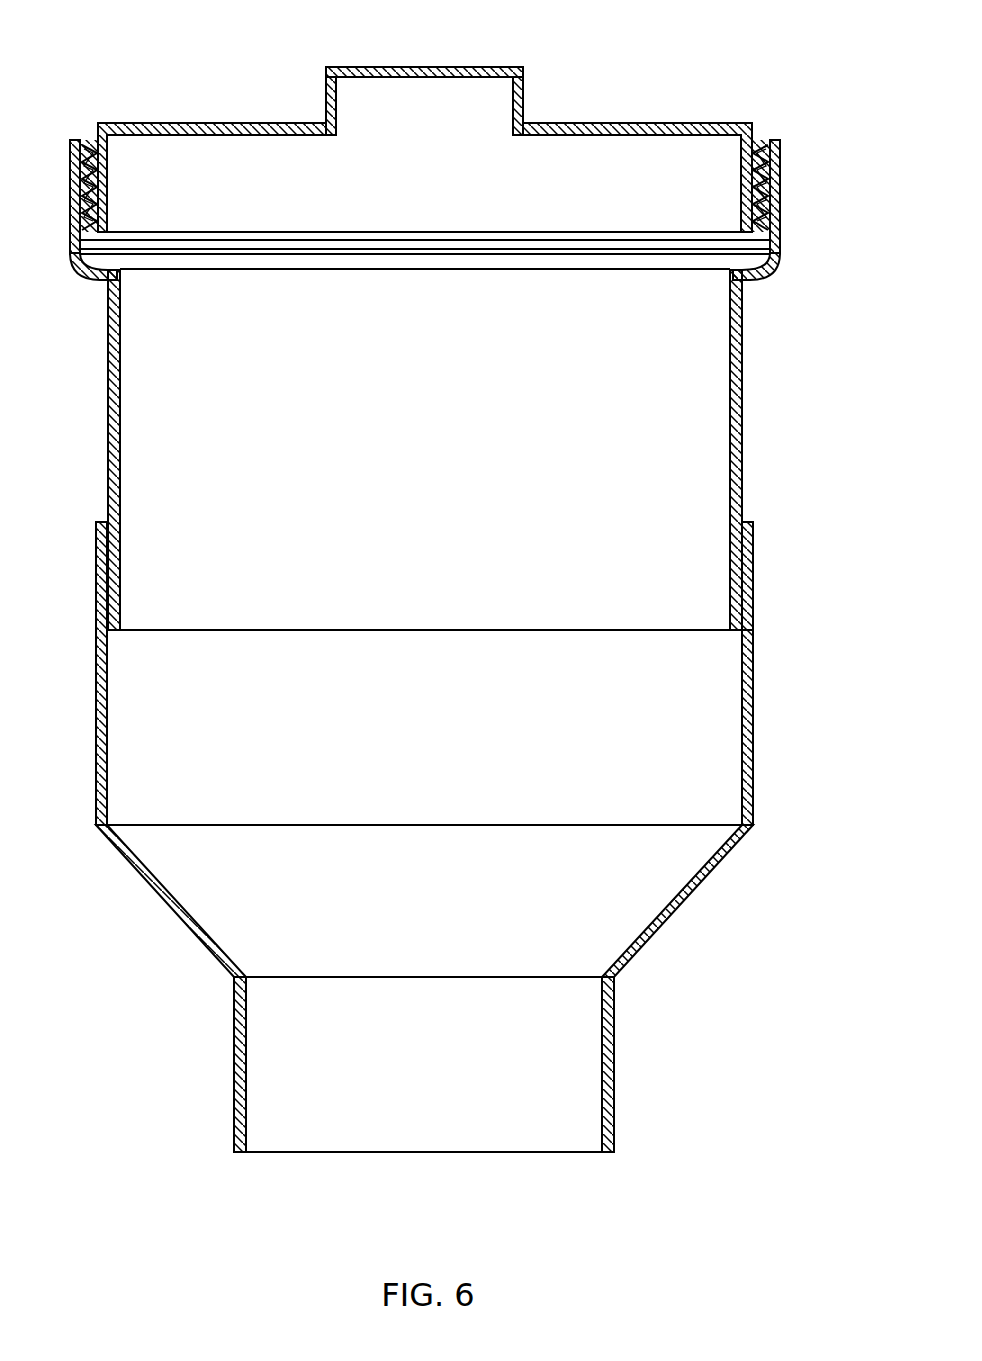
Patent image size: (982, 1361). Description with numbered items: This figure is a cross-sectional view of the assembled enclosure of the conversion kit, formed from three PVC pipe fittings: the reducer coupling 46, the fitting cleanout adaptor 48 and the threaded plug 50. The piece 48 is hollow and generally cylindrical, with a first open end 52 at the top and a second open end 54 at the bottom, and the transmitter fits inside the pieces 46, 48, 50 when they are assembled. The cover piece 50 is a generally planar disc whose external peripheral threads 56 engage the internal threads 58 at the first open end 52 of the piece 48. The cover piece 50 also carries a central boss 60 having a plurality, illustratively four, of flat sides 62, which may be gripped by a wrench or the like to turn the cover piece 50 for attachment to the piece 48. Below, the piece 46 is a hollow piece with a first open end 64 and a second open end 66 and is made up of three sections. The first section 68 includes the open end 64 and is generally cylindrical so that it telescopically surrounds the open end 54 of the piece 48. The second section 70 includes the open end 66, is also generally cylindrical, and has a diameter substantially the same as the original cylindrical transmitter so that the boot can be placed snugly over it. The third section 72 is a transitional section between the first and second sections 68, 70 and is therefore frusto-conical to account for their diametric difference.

The reducer coupling 46 is at (683, 903).
The fitting cleanout adaptor 48 is at (745, 397).
The threaded plug 50 is at (620, 122).
The first open end 52 is at (758, 140).
The second open end 54 is at (700, 630).
The external peripheral threads 56 is at (92, 140).
The internal threads 58 is at (105, 218).
The central boss 60 is at (443, 66).
The flat sides 62 is at (325, 83).
The first open end 64 is at (745, 522).
The second open end 66 is at (553, 1152).
The first section 68 is at (752, 798).
The second section 70 is at (614, 1043).
The third section 72 is at (234, 1043).